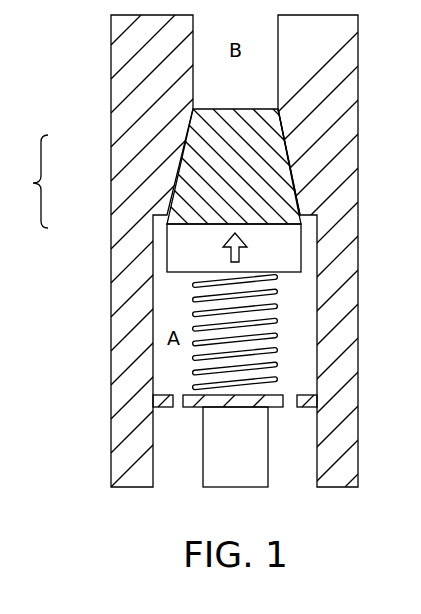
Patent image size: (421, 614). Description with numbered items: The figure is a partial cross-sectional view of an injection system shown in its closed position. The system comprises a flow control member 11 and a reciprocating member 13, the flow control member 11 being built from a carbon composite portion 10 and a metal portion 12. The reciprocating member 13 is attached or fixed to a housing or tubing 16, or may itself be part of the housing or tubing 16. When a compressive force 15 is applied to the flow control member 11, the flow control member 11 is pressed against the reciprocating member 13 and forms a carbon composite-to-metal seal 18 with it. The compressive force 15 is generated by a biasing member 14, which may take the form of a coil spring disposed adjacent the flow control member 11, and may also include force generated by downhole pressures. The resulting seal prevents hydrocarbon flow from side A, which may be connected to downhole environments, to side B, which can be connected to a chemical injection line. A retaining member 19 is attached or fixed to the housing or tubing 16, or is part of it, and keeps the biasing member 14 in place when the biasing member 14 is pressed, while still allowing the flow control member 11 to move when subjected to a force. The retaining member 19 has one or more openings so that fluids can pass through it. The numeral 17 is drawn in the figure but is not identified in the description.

The carbon composite portion 10 is at (193, 177).
The flow control member 11 is at (32, 183).
The metal portion 12 is at (180, 250).
The reciprocating member 13 is at (338, 70).
The biasing member 14 is at (278, 336).
The compressive force 15 is at (240, 253).
The housing or tubing 16 is at (337, 455).
The support plate 17 is at (178, 395).
The carbon composite-to-metal seal 18 is at (290, 152).
The retaining member 19 is at (160, 398).